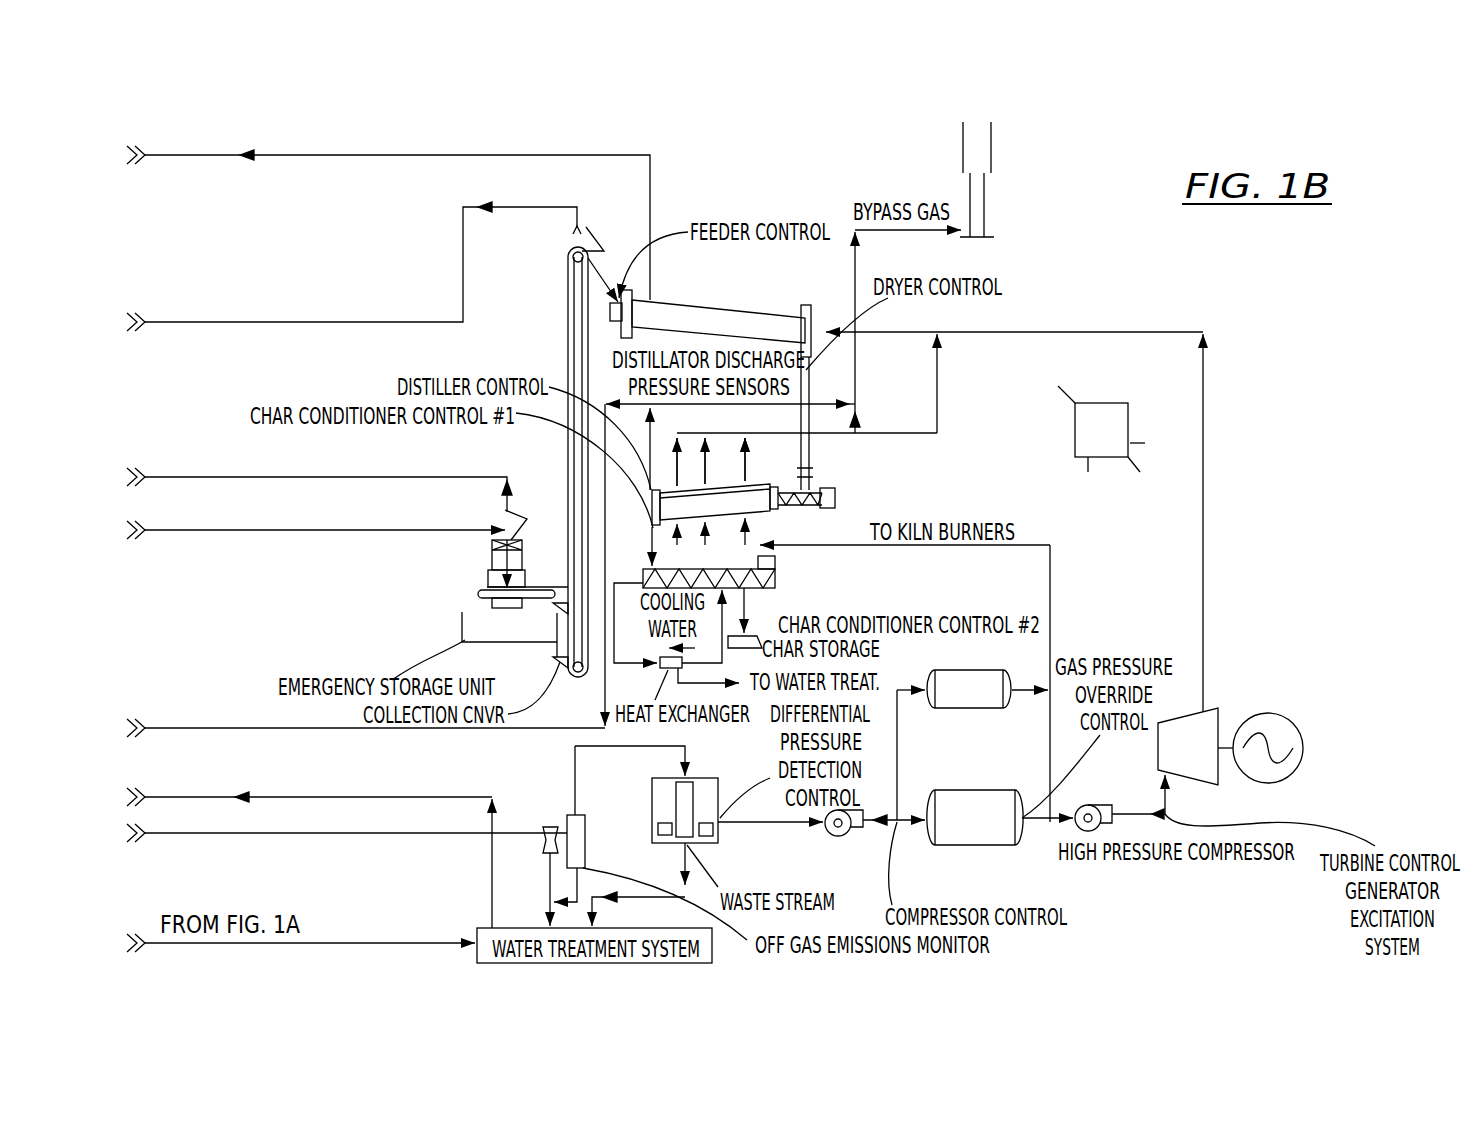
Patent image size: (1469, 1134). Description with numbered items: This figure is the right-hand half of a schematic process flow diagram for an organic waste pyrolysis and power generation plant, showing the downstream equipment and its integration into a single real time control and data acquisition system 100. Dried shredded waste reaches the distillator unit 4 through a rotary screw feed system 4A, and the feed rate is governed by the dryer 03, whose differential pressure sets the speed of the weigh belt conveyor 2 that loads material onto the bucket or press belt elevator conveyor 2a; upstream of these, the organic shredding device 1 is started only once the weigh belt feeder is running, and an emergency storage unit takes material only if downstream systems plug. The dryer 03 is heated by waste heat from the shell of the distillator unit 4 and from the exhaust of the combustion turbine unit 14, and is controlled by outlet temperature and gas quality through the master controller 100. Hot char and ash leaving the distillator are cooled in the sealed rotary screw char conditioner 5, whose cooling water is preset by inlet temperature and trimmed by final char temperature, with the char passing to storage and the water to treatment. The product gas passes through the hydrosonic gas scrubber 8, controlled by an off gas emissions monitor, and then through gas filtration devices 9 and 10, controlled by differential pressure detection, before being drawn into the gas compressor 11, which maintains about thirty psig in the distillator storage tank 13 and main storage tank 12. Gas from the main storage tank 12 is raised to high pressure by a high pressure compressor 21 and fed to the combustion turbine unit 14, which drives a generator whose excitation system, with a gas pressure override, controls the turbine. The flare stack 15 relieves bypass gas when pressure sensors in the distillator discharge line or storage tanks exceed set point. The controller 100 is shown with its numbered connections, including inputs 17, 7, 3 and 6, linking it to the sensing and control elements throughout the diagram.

The bucket or press belt elevator conveyor 2a is at (576, 325).
The dryer 03 is at (714, 318).
The flare stack 15 is at (985, 210).
The organic shredding device 1 is at (528, 573).
The weigh belt conveyor 2 is at (482, 594).
The dryer 4 is at (665, 503).
The rotary screw feed system 4A is at (822, 497).
The char conditioner 5 is at (748, 584).
The hydrosonic gas scrubber 8 is at (590, 830).
The gas filtration device 9 is at (662, 825).
The gas filtration device 10 is at (708, 830).
The gas compressor 11 is at (838, 836).
The main storage tank 12 is at (993, 843).
The distillator storage tank 13 is at (970, 708).
The combustion turbine unit 14 is at (1185, 782).
The high pressure compressor 21 is at (1065, 832).
The real time control and data acquisition system 100 is at (1088, 388).
The control input 17 is at (1054, 386).
The control input 7 is at (1149, 442).
The control input 3 is at (1086, 480).
The control input 6 is at (1139, 480).